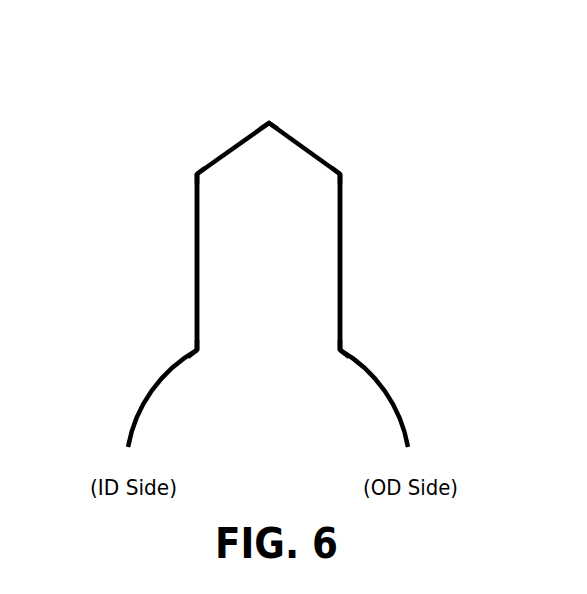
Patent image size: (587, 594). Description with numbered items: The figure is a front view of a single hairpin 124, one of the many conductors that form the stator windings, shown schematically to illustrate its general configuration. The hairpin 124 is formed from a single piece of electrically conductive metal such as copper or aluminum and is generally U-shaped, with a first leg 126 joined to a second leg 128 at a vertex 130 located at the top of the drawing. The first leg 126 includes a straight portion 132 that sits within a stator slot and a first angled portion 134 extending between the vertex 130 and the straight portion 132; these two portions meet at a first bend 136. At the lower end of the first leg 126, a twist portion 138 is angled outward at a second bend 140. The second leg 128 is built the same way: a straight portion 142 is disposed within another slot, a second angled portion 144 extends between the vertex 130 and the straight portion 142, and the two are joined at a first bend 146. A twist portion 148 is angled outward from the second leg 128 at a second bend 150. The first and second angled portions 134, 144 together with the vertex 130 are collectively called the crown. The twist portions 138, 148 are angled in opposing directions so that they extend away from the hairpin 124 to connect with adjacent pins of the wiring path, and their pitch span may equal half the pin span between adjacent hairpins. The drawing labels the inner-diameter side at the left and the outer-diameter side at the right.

The hairpin 124 is at (183, 76).
The first leg 126 is at (339, 315).
The second leg 128 is at (195, 315).
The vertex 130 is at (270, 121).
The straight portion 132 is at (342, 234).
The first angled portion 134 is at (309, 151).
The first bend 136 is at (338, 175).
The twist portion 138 is at (381, 386).
The second bend 140 is at (339, 351).
The straight portion 142 is at (199, 292).
The second angled portion 144 is at (227, 147).
The first bend 146 is at (199, 176).
The twist portion 148 is at (156, 386).
The second bend 150 is at (199, 351).